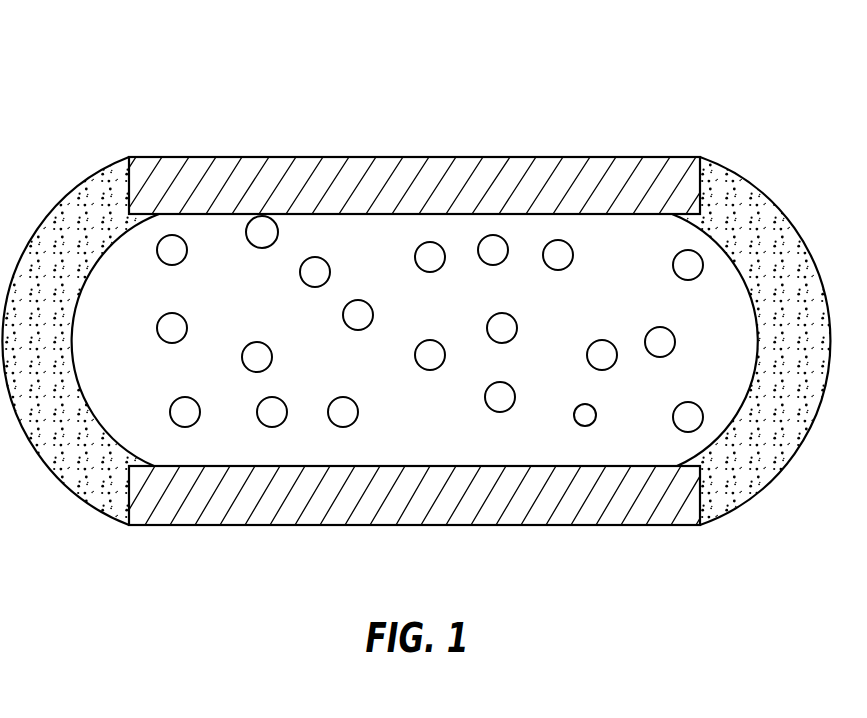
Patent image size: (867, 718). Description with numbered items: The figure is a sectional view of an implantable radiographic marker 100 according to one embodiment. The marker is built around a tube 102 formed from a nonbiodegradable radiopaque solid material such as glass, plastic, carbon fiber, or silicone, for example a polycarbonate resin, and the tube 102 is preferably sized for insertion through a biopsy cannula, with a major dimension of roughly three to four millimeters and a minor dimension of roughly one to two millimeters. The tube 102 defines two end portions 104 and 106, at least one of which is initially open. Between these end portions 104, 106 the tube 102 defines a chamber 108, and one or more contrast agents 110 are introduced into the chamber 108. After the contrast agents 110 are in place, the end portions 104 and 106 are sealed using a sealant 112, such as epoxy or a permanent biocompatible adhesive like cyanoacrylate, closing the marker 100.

The implantable radiographic marker 100 is at (134, 36).
The tube 102 is at (413, 156).
The end portion 104 is at (222, 238).
The end portion 106 is at (607, 237).
The chamber 108 is at (423, 433).
The contrast agents 110 is at (557, 255).
The sealant 112 is at (80, 487).